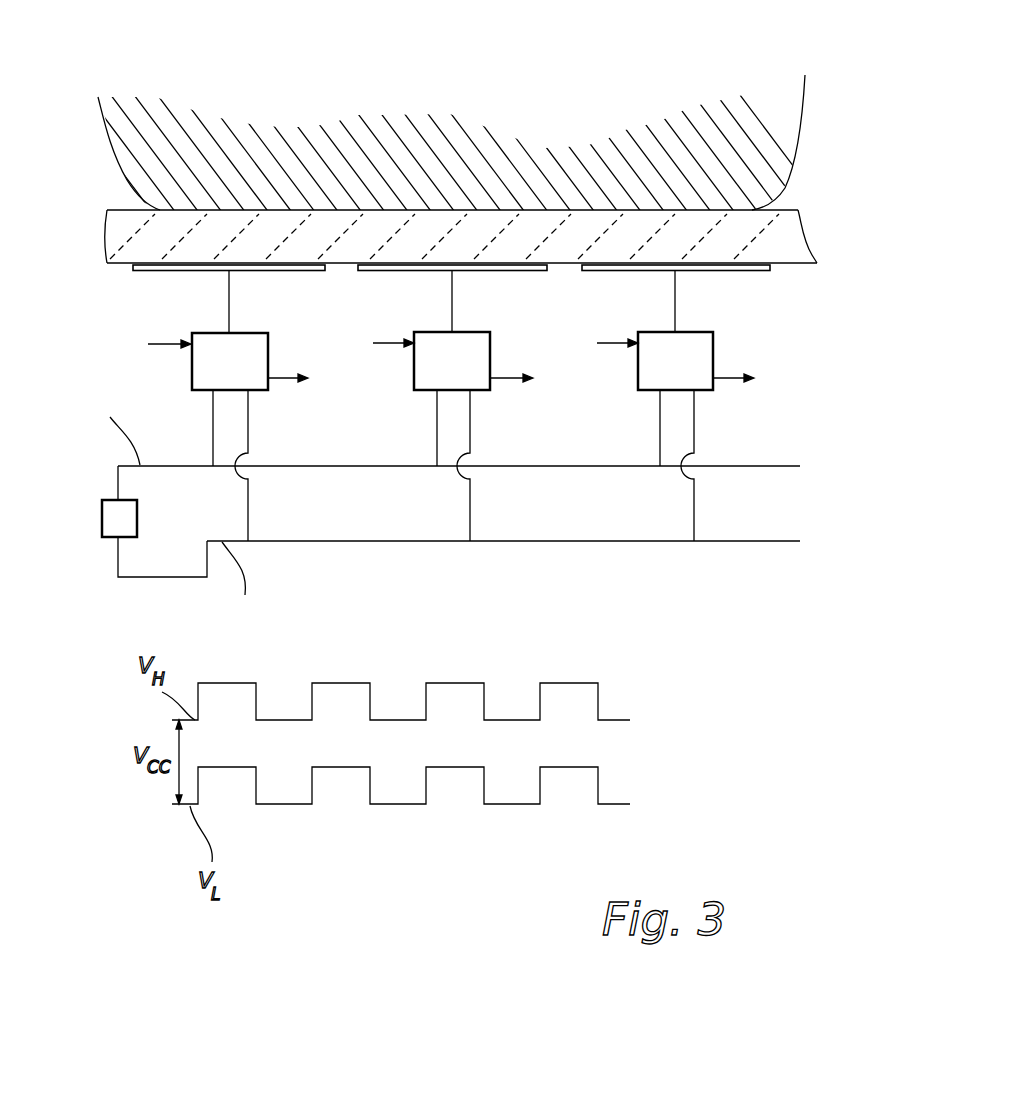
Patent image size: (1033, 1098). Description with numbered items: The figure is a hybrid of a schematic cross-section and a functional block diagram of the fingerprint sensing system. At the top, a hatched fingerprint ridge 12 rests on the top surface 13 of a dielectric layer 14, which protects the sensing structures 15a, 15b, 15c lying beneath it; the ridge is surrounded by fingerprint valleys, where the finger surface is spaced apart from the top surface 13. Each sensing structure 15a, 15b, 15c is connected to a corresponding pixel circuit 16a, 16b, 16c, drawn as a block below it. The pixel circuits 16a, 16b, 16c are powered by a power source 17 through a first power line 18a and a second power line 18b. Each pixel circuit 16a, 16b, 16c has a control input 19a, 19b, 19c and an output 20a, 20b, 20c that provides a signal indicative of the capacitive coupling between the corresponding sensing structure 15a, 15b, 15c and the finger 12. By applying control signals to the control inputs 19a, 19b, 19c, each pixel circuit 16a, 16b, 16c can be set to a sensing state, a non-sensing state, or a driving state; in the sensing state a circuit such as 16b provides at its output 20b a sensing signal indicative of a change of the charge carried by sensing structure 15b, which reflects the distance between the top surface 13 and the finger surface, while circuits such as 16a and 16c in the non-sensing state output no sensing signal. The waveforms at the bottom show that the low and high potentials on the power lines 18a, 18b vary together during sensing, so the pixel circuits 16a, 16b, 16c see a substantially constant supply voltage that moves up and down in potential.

The fingerprint ridge 12 is at (787, 97).
The top surface 13 is at (785, 210).
The dielectric layer 14 is at (792, 233).
The sensing structure 15a is at (180, 263).
The sensing structure 15b is at (412, 263).
The sensing structure 15c is at (698, 263).
The pixel circuit 16a is at (213, 332).
The pixel circuit 16b is at (462, 332).
The pixel circuit 16c is at (713, 348).
The power source 17 is at (100, 512).
The first power line 18a is at (157, 577).
The second power line 18b is at (353, 465).
The control input 19a is at (192, 348).
The control input 19b is at (413, 347).
The control input 19c is at (637, 350).
The output 20a is at (268, 388).
The output 20b is at (490, 386).
The output 20c is at (713, 386).